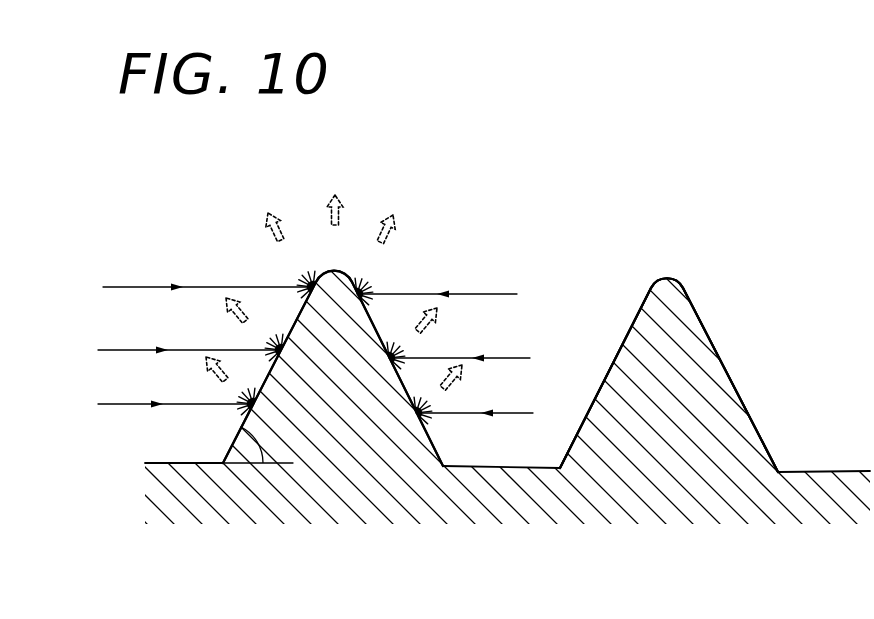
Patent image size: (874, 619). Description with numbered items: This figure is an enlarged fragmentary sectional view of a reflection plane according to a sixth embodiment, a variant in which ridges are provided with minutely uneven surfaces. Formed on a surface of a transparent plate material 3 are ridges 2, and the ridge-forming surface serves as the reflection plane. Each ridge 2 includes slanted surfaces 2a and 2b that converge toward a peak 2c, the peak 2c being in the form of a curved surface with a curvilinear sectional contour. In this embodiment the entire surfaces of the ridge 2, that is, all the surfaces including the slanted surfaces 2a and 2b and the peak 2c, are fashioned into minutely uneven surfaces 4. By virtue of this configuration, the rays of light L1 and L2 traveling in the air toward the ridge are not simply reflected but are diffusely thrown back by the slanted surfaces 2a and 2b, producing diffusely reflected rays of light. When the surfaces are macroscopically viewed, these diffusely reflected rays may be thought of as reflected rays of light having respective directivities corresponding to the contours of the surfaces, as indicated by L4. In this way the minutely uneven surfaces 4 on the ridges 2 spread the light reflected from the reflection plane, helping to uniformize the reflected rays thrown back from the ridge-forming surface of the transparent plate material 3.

The ridge 2 is at (692, 390).
The slanted surface 2a is at (215, 442).
The slanted surface 2b is at (455, 446).
The peak 2c is at (323, 265).
The transparent plate material 3 is at (699, 510).
The minutely uneven surfaces 4 is at (340, 270).
The ray of light L1 is at (191, 346).
The ray of light L2 is at (462, 354).
The reflected rays of light having directivities L4 is at (248, 313).